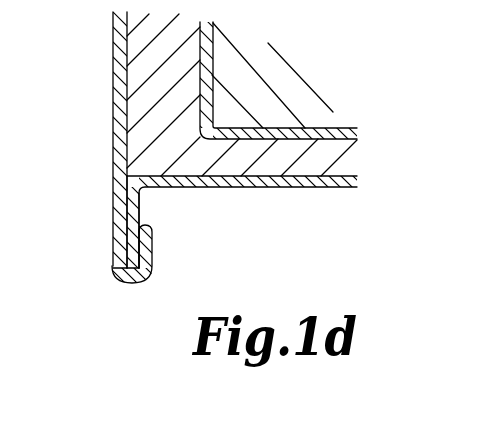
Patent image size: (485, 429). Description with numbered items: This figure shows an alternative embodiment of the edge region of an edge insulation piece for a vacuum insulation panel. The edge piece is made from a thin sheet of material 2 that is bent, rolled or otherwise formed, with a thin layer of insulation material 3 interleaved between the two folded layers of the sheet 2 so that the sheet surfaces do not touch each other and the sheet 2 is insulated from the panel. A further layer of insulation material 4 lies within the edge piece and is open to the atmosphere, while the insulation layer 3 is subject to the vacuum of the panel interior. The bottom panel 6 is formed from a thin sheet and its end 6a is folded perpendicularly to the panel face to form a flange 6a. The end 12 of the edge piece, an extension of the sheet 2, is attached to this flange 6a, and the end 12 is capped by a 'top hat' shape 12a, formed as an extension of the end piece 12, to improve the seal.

The thin sheet of material 2 is at (200, 65).
The insulation material layer 3 is at (145, 138).
The further layer of insulation material 4 is at (267, 95).
The bottom panel 6 is at (318, 188).
The panel end flange 6a is at (137, 207).
The end of the edge piece 12 is at (112, 240).
The top hat shape cap 12a is at (132, 277).